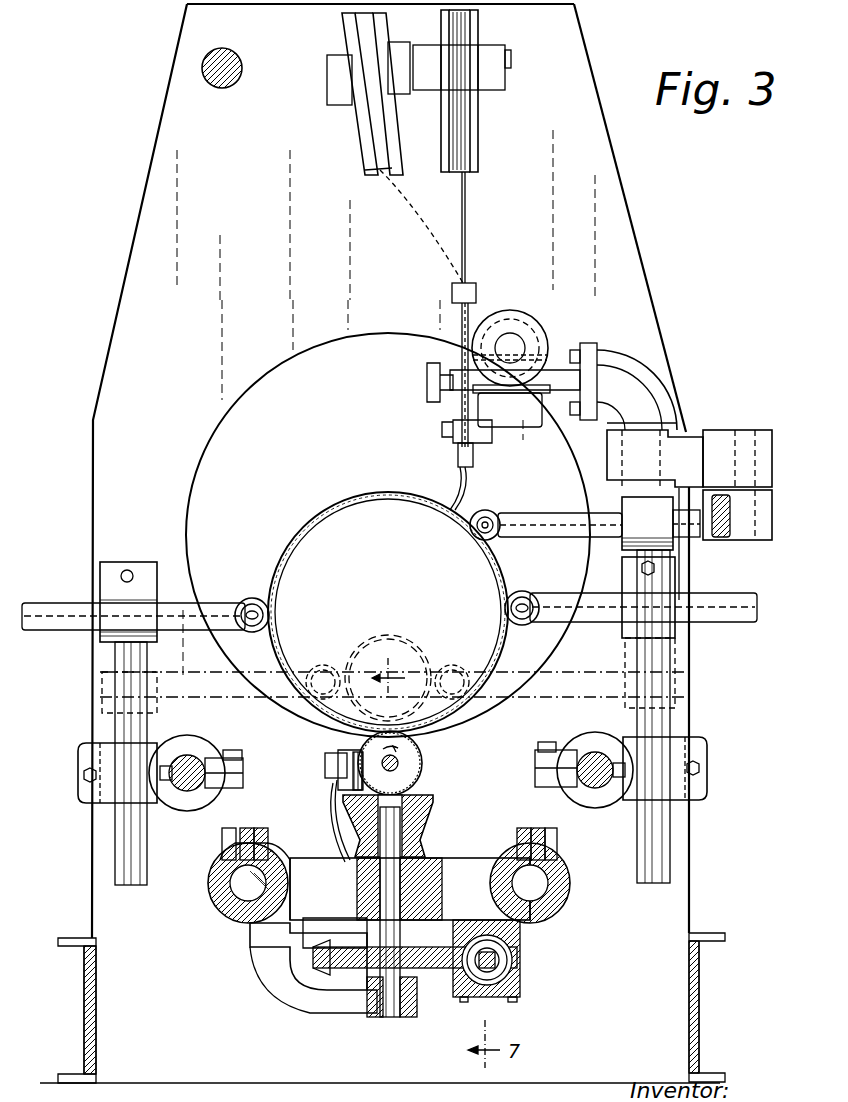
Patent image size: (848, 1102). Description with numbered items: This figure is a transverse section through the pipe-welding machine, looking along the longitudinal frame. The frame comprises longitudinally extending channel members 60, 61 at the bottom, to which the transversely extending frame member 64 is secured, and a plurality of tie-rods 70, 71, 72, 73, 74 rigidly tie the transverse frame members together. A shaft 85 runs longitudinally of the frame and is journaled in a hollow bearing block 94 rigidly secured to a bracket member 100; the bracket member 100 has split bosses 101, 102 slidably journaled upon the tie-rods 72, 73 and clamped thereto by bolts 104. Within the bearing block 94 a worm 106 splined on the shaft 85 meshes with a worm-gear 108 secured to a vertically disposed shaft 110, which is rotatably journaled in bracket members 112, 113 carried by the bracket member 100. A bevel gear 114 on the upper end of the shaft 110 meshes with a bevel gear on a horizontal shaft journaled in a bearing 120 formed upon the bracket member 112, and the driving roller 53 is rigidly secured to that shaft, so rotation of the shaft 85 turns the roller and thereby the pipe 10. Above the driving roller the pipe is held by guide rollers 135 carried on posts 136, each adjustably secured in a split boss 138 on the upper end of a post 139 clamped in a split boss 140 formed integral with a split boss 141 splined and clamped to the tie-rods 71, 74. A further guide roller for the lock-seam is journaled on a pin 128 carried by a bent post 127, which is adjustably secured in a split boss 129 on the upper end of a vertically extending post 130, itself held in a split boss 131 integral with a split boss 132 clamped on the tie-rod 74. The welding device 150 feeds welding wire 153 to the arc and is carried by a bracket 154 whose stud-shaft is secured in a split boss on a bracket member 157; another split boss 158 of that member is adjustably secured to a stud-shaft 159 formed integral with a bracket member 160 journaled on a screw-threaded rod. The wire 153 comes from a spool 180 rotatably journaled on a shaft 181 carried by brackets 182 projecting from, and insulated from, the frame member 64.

The workpiece circle 10 is at (370, 642).
The driving roller 53 is at (418, 758).
The channel member 60 is at (60, 936).
The channel member 61 is at (706, 932).
The frame member 64 is at (178, 212).
The tie-rod 70 is at (243, 62).
The tie-rod 71 is at (193, 755).
The tie-rod 72 is at (280, 842).
The tie-rod 73 is at (552, 878).
The tie-rod 74 is at (590, 755).
The shaft 85 is at (510, 960).
The bearing block 94 is at (518, 995).
The bracket member 100 is at (516, 852).
The split boss 101 is at (220, 892).
The split boss 102 is at (565, 888).
The bolt 104 is at (222, 845).
The worm 106 is at (520, 977).
The worm-gear 108 is at (436, 972).
The shaft 110 is at (402, 867).
The bracket member 112 is at (344, 832).
The bracket member 113 is at (270, 965).
The bevel gear 114 is at (432, 797).
The bearing 120 is at (335, 755).
The bent post 127 is at (540, 518).
The pin 128 is at (494, 514).
The split boss 129 is at (632, 508).
The post 130 is at (660, 658).
The split boss 131 is at (673, 752).
The split boss 132 is at (542, 748).
The guide roller 135 is at (250, 596).
The post 136 is at (163, 600).
The split boss 138 is at (108, 586).
The post 139 is at (128, 668).
The split boss 140 is at (122, 790).
The split boss 141 is at (172, 800).
The welding device 150 is at (523, 318).
The welding wire 153 is at (467, 200).
The bracket 154 is at (598, 350).
The bracket member 157 is at (690, 450).
The split boss 158 is at (765, 432).
The stud-shaft 159 is at (733, 432).
The bracket member 160 is at (735, 538).
The spool 180 is at (376, 170).
The shaft 181 is at (512, 58).
The bracket 182 is at (503, 44).